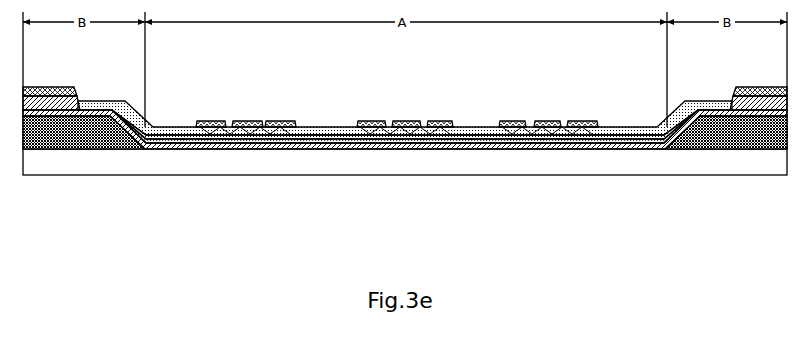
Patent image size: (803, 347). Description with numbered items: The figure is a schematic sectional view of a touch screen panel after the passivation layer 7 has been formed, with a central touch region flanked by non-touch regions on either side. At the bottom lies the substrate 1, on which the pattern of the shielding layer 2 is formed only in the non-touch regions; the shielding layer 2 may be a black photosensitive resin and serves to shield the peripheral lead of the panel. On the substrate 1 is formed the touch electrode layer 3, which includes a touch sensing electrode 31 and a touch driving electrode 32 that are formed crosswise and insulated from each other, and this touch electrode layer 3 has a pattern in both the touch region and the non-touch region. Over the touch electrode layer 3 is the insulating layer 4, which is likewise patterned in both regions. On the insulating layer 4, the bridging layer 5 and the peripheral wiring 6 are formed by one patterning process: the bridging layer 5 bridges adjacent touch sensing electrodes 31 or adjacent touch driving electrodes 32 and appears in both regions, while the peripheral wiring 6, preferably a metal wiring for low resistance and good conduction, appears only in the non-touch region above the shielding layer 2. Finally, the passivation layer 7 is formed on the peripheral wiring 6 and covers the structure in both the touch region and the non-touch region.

The substrate 1 is at (168, 163).
The shielding layer 2 is at (740, 150).
The touch electrode layer 3 is at (405, 179).
The touch sensing electrode 31 is at (278, 146).
The touch driving electrode 32 is at (248, 146).
The insulating layer 4 is at (323, 146).
The bridging layer 5 is at (274, 127).
The peripheral wiring 6 is at (79, 92).
The passivation layer 7 is at (176, 127).